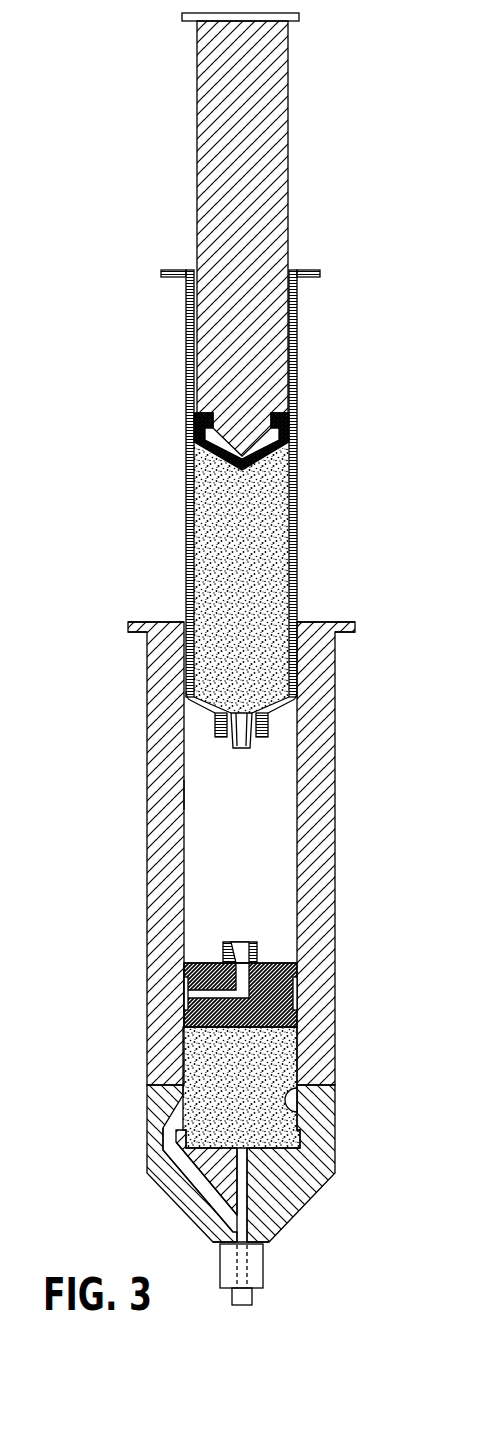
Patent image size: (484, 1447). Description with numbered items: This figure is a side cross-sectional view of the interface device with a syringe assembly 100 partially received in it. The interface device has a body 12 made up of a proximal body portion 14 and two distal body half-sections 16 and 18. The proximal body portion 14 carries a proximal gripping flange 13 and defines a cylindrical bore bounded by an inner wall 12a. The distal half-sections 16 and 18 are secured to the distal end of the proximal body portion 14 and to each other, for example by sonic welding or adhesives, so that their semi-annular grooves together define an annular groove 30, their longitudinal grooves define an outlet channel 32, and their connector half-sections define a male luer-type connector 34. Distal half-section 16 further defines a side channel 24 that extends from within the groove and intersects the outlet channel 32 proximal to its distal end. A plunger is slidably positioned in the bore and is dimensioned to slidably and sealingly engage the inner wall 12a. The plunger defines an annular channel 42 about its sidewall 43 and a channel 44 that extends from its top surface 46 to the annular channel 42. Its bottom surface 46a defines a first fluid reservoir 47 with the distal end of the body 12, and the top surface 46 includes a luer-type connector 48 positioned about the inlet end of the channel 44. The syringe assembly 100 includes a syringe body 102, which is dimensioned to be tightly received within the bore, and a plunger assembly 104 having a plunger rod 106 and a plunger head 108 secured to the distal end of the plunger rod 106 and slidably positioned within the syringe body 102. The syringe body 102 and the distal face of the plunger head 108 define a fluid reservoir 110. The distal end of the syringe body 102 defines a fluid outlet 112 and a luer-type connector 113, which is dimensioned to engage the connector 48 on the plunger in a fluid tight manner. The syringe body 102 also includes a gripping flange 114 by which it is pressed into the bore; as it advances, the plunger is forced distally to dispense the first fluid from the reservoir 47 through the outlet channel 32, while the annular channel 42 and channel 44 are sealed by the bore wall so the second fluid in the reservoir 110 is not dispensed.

The syringe assembly 100 is at (254, 390).
The syringe body 102 is at (297, 540).
The plunger assembly 104 is at (290, 337).
The plunger rod 106 is at (288, 95).
The plunger head 108 is at (290, 457).
The fluid reservoir 110 is at (230, 594).
The fluid outlet 112 is at (253, 742).
The luer-type connector 113 is at (262, 727).
The gripping flange 114 is at (309, 270).
The body 12 is at (248, 825).
The inner wall 12a is at (188, 806).
The proximal gripping flange 13 is at (138, 621).
The proximal body portion 14 is at (150, 766).
The distal body half-section 16 is at (152, 1137).
The distal body half-section 18 is at (244, 1201).
The side channel 24 is at (183, 1170).
The annular groove 30 is at (287, 1093).
The outlet channel 32 is at (245, 1188).
The male luer-type connector 34 is at (258, 1268).
The annular channel 42 is at (237, 993).
The sidewall 43 is at (177, 969).
The channel 44 is at (198, 995).
The top surface 46 is at (277, 963).
The bottom surface 46a is at (205, 1030).
The first fluid reservoir 47 is at (247, 1070).
The luer-type connector 48 is at (224, 944).